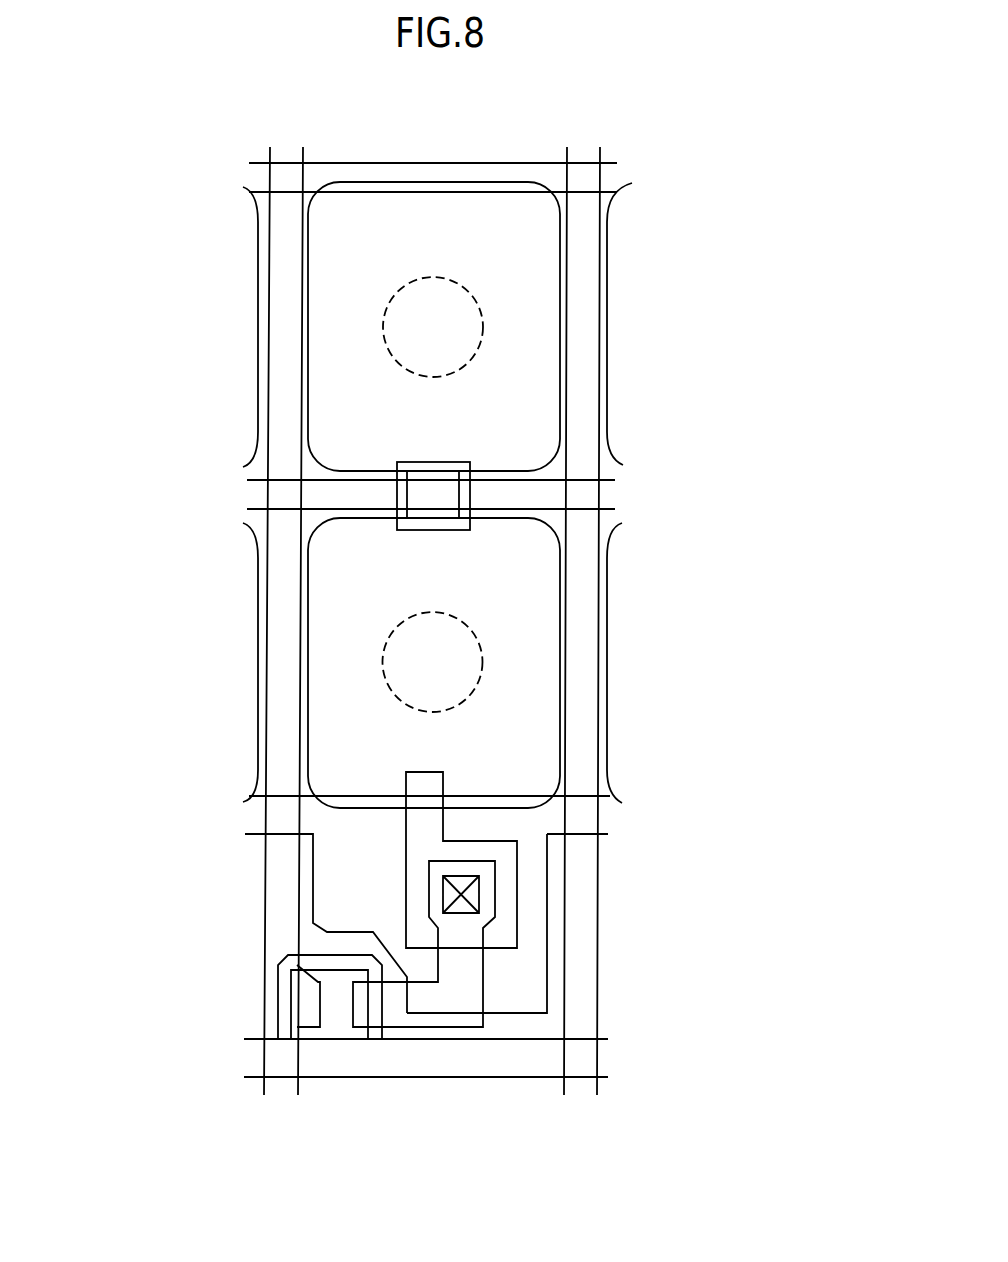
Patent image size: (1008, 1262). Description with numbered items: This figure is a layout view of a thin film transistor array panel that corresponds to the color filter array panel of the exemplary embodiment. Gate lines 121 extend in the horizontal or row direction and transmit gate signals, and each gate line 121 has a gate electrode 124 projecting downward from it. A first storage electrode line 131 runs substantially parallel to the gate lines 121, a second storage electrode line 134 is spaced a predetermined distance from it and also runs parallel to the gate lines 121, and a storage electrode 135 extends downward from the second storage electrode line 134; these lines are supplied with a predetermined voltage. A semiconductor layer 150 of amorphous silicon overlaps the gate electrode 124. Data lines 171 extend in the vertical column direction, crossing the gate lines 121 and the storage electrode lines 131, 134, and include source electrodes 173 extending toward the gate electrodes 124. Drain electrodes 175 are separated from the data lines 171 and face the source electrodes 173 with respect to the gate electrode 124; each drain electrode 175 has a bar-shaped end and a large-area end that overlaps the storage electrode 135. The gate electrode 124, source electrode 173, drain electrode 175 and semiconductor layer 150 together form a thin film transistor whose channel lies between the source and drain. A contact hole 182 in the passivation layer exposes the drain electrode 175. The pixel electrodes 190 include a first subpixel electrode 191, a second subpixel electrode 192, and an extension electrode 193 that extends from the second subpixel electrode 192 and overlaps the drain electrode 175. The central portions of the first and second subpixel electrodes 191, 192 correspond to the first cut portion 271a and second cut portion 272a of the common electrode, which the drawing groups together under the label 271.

The gate line 121 is at (487, 1077).
The gate electrode 124 is at (313, 956).
The first storage electrode line 131 is at (580, 478).
The second storage electrode line 134 is at (573, 835).
The storage electrode 135 is at (547, 967).
The semiconductor layer 150 is at (355, 1038).
The data line 171 is at (264, 873).
The source electrode 173 is at (310, 1028).
The drain electrode 175 is at (397, 1028).
The contact hole 182 is at (479, 893).
The pixel electrode 190 is at (308, 565).
The first subpixel electrode 191 is at (307, 397).
The second subpixel electrode 192 is at (307, 720).
The extension electrode 193 is at (404, 838).
The light blocking pattern 271 is at (601, 494).
The first cut portion 271a is at (483, 327).
The second cut portion 272a is at (482, 660).